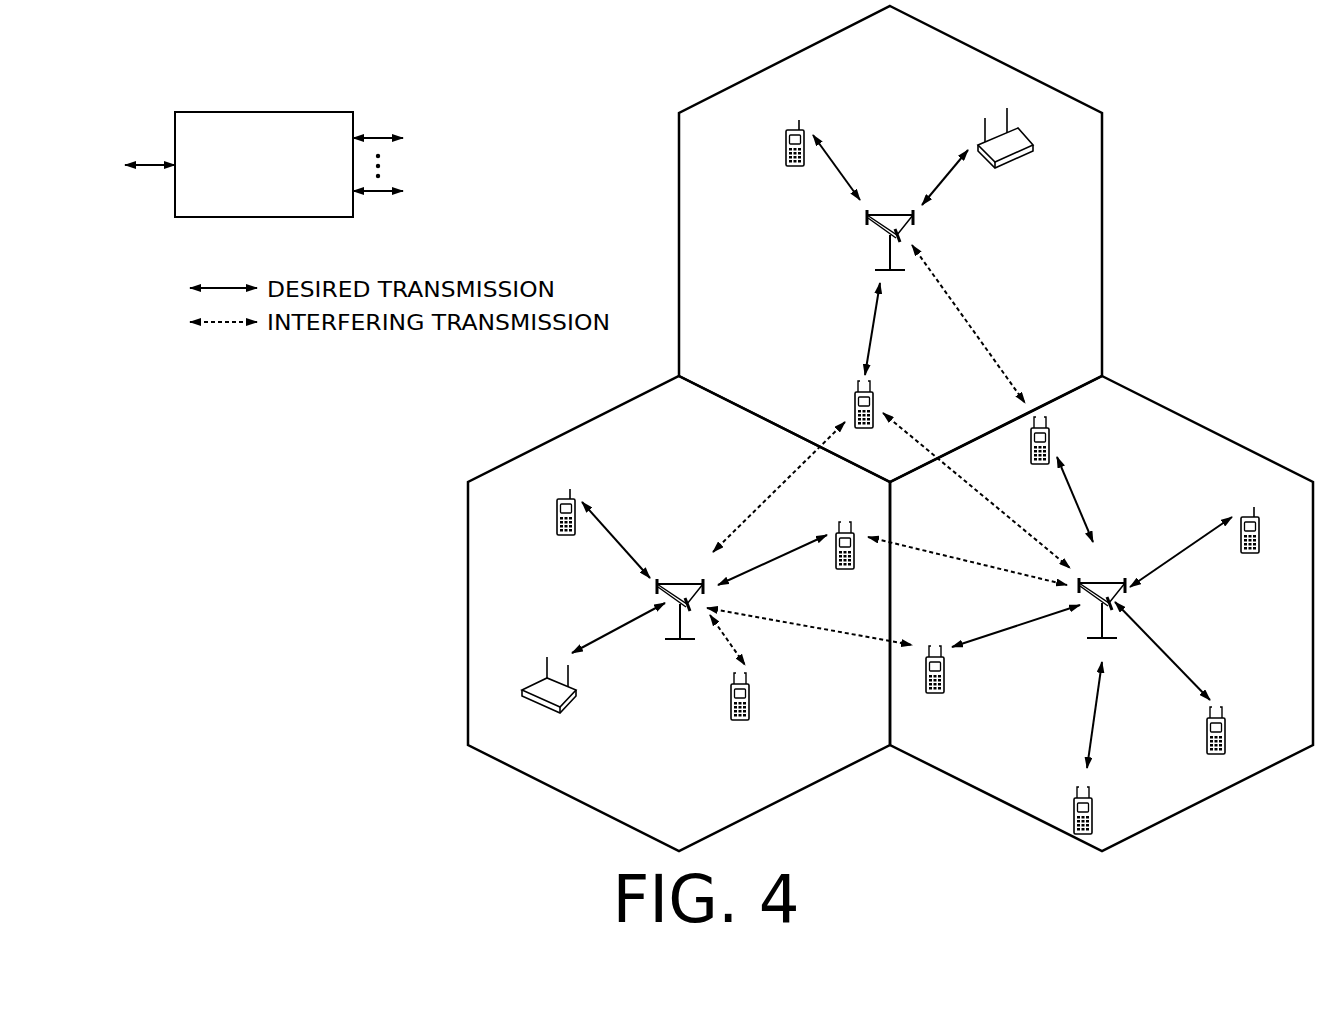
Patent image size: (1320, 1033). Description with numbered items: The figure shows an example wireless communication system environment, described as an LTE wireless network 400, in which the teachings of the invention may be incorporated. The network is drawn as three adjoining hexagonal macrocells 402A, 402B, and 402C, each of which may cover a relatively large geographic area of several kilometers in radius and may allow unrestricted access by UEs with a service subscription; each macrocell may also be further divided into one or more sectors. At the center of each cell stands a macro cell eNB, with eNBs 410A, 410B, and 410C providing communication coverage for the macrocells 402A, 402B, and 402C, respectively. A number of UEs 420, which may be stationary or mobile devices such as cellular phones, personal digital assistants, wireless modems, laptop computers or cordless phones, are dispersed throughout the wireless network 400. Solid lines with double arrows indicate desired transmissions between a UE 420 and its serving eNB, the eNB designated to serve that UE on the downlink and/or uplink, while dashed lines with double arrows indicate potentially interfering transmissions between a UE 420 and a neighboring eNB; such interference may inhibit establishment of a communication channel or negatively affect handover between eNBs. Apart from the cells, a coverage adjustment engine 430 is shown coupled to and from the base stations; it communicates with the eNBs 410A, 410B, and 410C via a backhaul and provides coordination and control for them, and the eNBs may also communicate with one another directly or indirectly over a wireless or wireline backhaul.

The wireless network 400 is at (1250, 73).
The macrocell 402A is at (997, 60).
The macrocell 402B is at (544, 442).
The macrocell 402C is at (1205, 428).
The eNB 410A is at (882, 213).
The eNB 410B is at (677, 582).
The eNB 410C is at (1100, 582).
The UE 420 is at (885, 464).
The coverage adjustment engine 430 is at (290, 99).